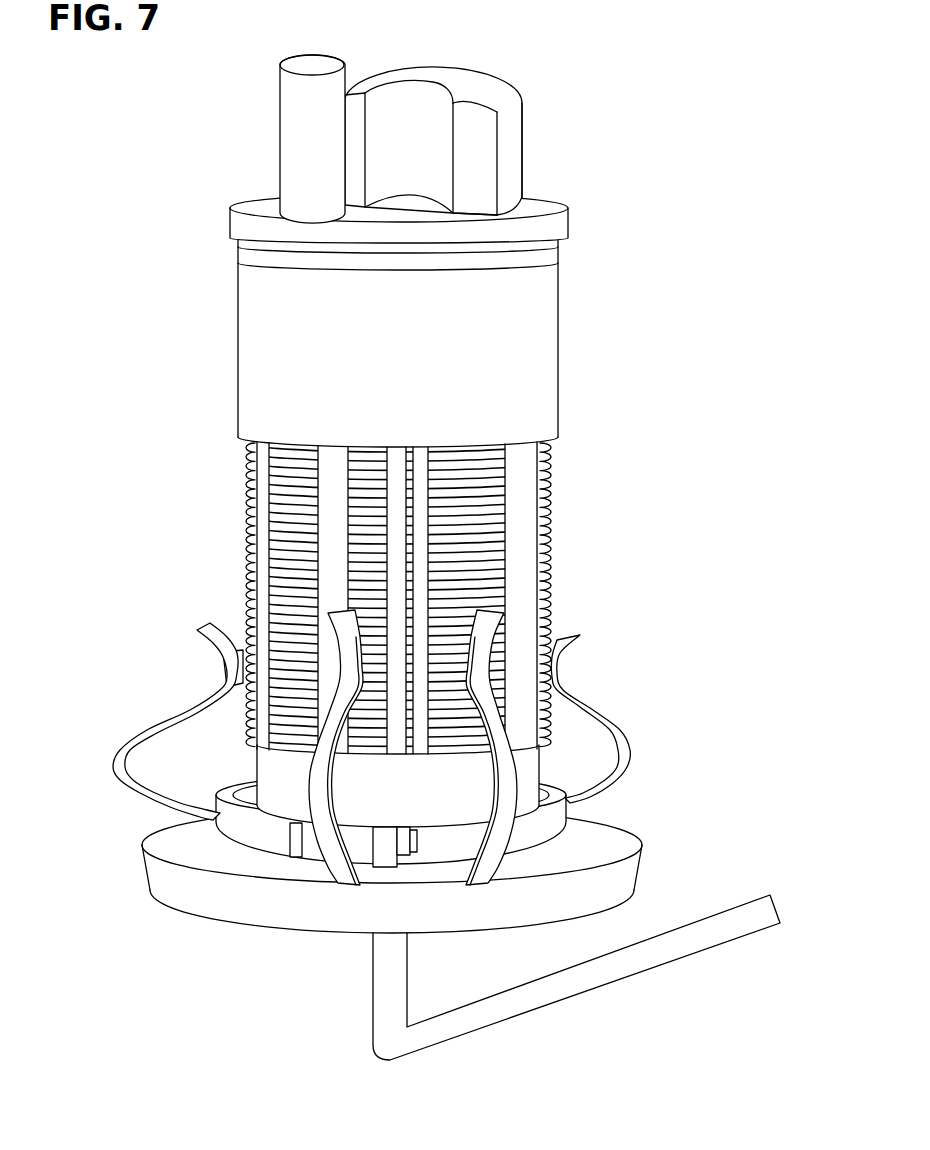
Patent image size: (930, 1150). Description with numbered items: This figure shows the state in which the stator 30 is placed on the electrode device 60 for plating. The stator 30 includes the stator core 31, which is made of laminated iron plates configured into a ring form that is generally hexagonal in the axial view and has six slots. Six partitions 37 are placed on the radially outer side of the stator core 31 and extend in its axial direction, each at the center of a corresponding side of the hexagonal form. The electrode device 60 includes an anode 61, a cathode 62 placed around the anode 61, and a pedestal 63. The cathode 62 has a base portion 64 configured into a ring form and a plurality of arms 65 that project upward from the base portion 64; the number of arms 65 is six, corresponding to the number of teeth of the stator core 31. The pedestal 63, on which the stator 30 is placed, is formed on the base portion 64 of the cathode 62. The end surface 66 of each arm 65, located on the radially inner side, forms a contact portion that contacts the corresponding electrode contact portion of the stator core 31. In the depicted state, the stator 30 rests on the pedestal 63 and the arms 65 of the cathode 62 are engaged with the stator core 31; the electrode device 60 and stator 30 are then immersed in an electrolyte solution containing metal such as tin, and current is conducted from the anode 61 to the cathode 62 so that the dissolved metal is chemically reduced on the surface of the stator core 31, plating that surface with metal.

The stator 30 is at (575, 320).
The stator core 31 is at (283, 543).
The partitions 37 is at (327, 483).
The electrode device 60 is at (234, 988).
The anode 61 is at (440, 1032).
The cathode 62 is at (90, 780).
The pedestal 63 is at (223, 787).
The base portion 64 is at (167, 883).
The arms 65 is at (340, 610).
The end surface 66 is at (227, 670).